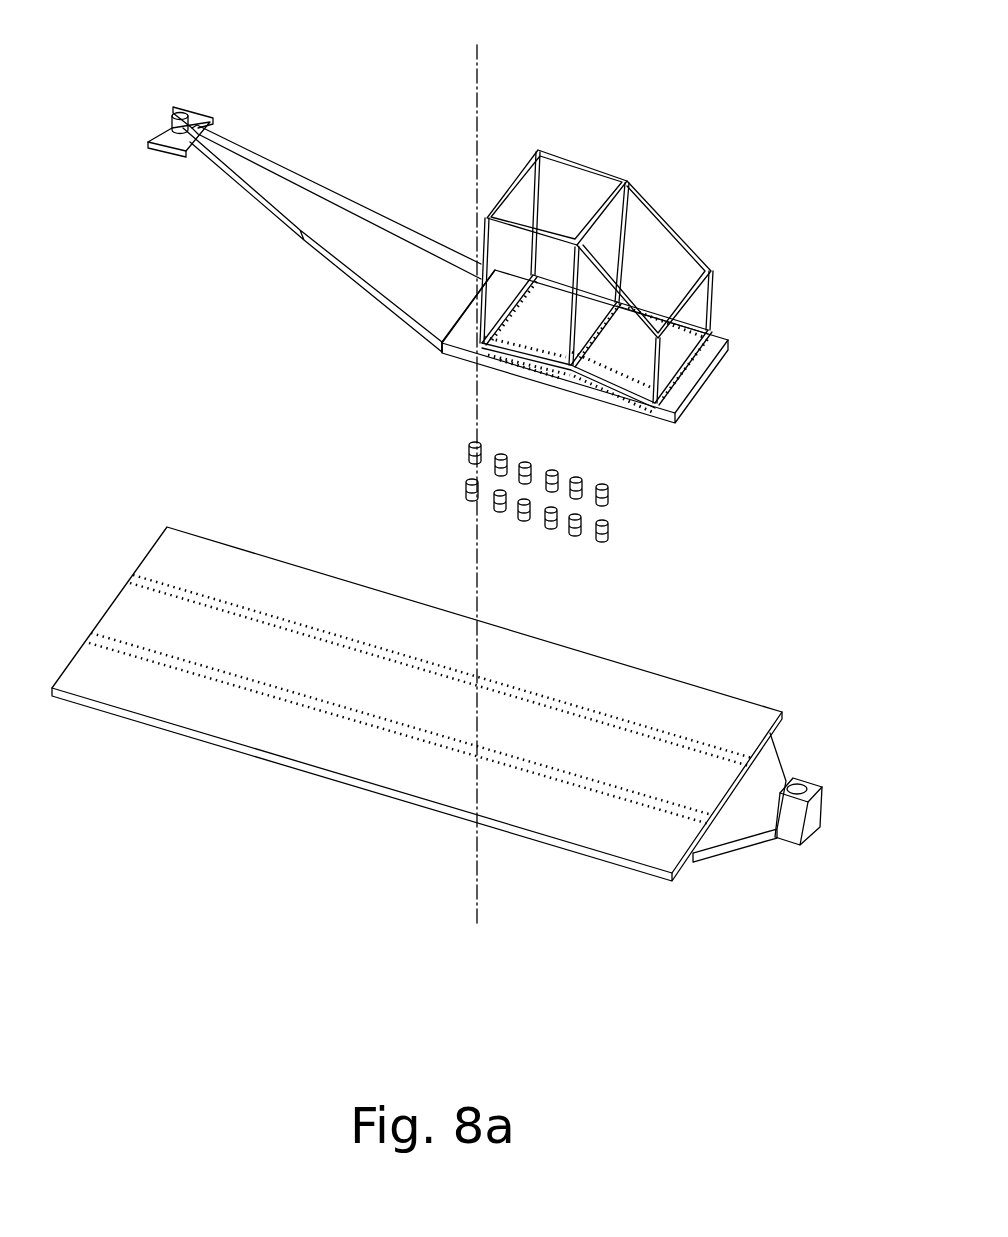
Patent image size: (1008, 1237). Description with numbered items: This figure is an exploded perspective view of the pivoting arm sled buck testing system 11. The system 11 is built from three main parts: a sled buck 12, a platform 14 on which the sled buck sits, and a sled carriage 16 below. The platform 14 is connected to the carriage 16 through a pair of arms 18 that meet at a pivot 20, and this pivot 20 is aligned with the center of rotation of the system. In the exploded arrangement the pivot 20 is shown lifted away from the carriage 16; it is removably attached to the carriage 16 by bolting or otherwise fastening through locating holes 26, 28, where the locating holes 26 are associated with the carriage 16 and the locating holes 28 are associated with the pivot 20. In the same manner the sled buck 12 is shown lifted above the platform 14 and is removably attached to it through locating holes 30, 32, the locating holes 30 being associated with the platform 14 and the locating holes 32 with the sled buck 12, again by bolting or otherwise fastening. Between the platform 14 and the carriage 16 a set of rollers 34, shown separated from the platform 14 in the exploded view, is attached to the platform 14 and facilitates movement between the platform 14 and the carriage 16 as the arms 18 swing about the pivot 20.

The pivoting arm sled buck testing system 11 is at (790, 90).
The sled buck 12 is at (617, 173).
The platform 14 is at (473, 313).
The sled carriage 16 is at (345, 597).
The arms 18 is at (270, 157).
The pivot 20 is at (180, 108).
The locating holes 26 is at (178, 660).
The locating holes 28 is at (162, 136).
The locating holes 30 is at (716, 333).
The locating holes 32 is at (632, 386).
The rollers 34 is at (633, 482).